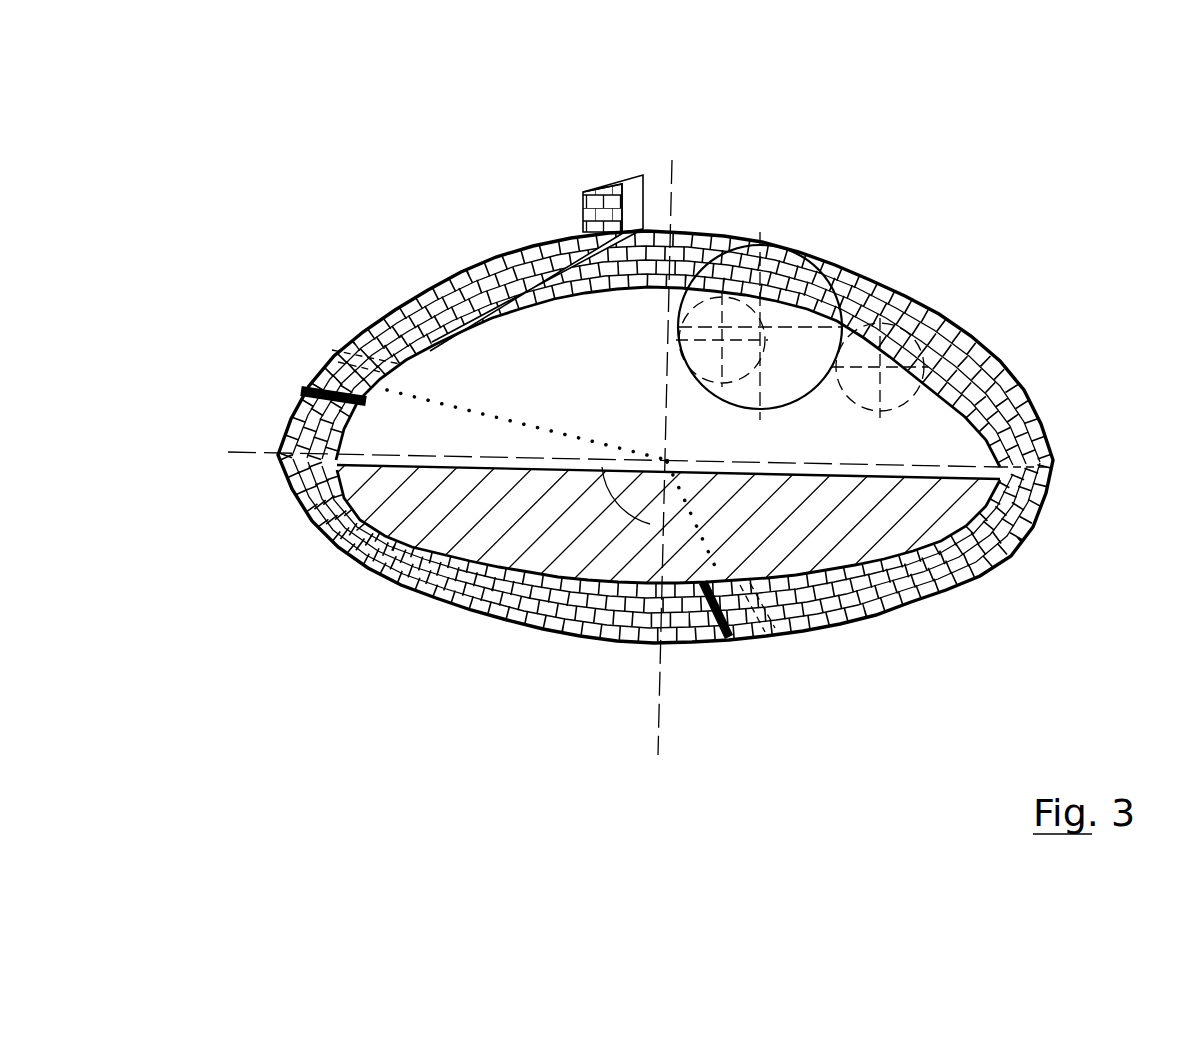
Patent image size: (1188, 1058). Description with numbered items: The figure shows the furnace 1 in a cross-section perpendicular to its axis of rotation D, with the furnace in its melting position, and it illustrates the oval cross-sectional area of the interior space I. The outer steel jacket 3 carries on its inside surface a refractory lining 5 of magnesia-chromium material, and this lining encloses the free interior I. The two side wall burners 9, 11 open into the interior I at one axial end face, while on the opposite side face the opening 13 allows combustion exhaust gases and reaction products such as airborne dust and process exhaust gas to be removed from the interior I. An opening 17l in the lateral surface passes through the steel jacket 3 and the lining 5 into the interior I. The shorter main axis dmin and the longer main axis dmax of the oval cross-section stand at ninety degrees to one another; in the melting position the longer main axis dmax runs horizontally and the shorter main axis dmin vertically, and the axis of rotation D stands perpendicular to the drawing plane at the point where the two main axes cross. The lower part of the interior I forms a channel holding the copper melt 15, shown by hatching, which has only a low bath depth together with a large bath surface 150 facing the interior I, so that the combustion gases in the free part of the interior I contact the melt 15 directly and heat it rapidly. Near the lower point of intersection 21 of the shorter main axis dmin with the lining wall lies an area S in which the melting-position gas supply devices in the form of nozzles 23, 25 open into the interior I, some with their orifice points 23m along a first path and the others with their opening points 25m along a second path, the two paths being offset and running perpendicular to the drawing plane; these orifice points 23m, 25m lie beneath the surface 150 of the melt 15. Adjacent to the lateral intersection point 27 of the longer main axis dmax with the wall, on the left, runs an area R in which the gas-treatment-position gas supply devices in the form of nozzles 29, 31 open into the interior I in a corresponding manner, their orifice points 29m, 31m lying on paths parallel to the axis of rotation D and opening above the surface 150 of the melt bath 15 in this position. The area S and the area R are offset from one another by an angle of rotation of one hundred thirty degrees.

The furnace 1 is at (293, 718).
The outer steel jacket 3 is at (700, 228).
The refractory lining 5 is at (505, 268).
The side wall burner 9 is at (905, 330).
The side wall burner 11 is at (740, 240).
The opening 13 is at (833, 286).
The copper melt 15 is at (990, 572).
The surface of the melt bath 150 is at (795, 475).
The opening 17l is at (985, 377).
The lower point of intersection 21 is at (655, 570).
The melting-position gas supply device 23 is at (690, 647).
The orifice point 23m is at (702, 574).
The melting-position gas supply device 25 is at (762, 648).
The opening point 25m is at (747, 577).
The lateral intersection point 27 is at (350, 478).
The gas-treatment-position gas supply device 29 is at (317, 380).
The orifice point 29m is at (383, 407).
The gas-treatment-position gas supply device 31 is at (357, 350).
The orifice point 31m is at (402, 382).
The area R is at (322, 345).
The area S is at (740, 650).
The axis of rotation D is at (670, 459).
The shorter main axis dmin is at (665, 354).
The longer main axis dmax is at (935, 465).
The interior space I is at (492, 352).